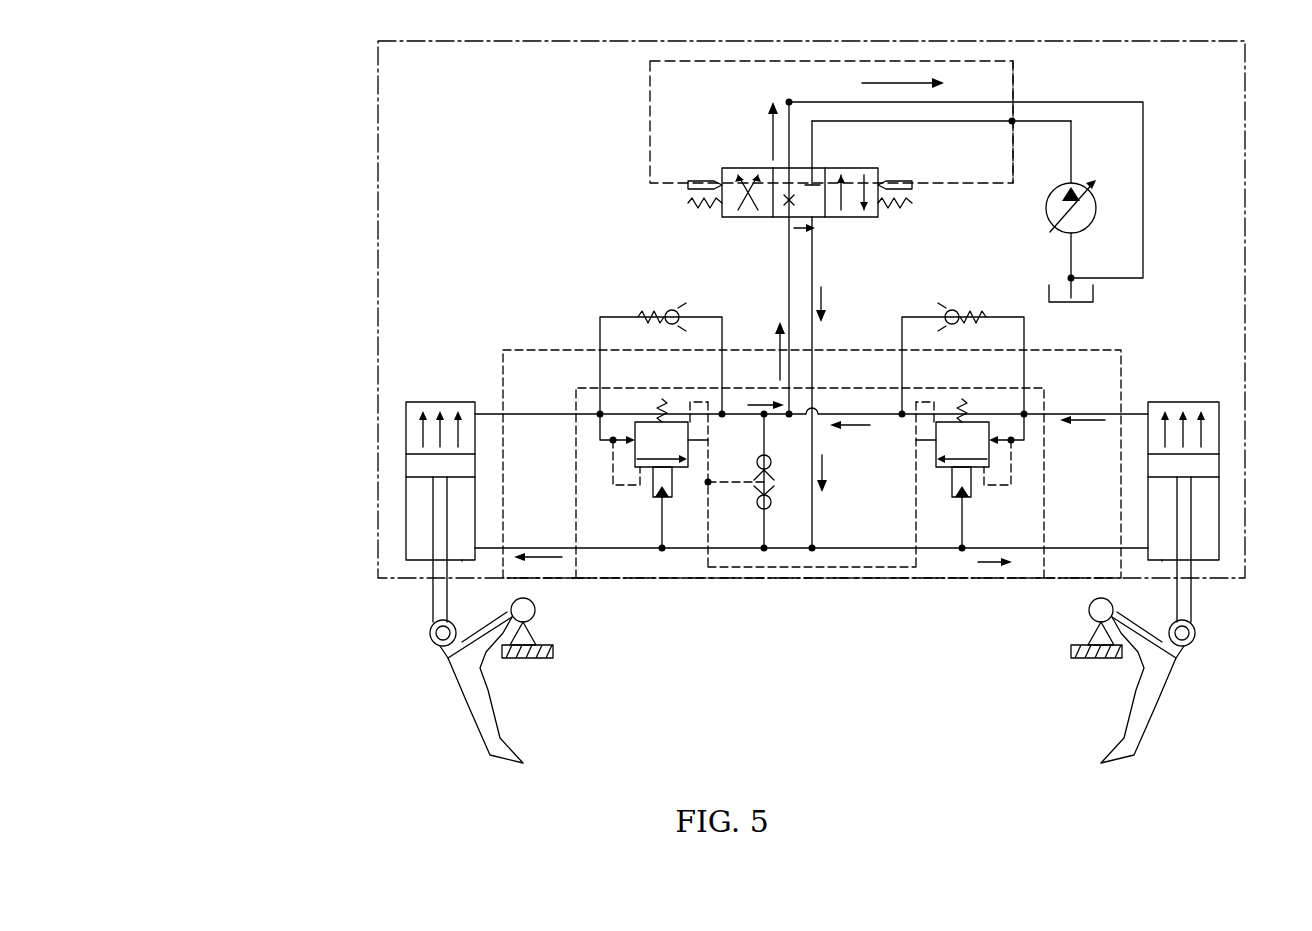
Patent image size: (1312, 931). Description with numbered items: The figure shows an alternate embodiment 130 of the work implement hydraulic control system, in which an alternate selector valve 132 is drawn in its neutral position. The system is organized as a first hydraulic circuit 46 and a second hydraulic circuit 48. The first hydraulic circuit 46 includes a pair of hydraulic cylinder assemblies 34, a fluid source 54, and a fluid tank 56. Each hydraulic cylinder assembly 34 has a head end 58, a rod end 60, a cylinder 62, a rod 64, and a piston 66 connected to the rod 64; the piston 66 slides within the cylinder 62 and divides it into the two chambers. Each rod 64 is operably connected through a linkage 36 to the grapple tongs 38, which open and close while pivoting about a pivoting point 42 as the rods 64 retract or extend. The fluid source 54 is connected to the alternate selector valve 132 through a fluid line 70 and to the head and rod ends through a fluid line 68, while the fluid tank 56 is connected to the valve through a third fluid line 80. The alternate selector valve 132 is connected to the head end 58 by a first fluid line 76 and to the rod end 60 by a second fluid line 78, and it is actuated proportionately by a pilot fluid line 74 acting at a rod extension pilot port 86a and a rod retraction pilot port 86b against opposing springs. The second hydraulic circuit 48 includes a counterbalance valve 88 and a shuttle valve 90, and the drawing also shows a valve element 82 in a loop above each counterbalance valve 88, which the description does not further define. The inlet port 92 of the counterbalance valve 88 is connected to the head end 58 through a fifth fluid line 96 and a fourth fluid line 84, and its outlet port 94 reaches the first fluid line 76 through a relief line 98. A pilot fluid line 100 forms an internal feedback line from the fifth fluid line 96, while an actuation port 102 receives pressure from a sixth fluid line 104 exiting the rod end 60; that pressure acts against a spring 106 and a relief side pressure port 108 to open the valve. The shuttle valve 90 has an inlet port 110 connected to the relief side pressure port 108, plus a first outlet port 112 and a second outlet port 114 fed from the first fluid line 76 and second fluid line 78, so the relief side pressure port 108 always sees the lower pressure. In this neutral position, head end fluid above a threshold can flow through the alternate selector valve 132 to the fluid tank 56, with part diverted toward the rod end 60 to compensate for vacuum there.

The alternate embodiment of the hydraulic control system 130 is at (212, 612).
The first hydraulic circuit 46 is at (378, 397).
The second hydraulic circuit 48 is at (935, 578).
The shuttle valve 90 is at (742, 483).
The alternate selector valve 132 is at (812, 162).
The rod extension pilot port 86a is at (688, 186).
The rod retraction pilot port 86b is at (912, 186).
The pilot fluid line 74 is at (1014, 130).
The first fluid line 76 is at (788, 308).
The second fluid line 78 is at (815, 244).
The fluid line 70 is at (882, 121).
The third fluid line 80 is at (1143, 102).
The fluid line 68 is at (1071, 123).
The fluid source 54 is at (1097, 212).
The fluid tank 56 is at (1094, 290).
The fourth fluid line 84 is at (538, 413).
The sixth fluid line 104 is at (538, 548).
The pressure relief valve 82 is at (638, 316).
The counterbalance valve 88 is at (808, 448).
The inlet port 92 is at (637, 421).
The spring 106 is at (662, 398).
The actuation port 102 is at (660, 497).
The fifth fluid line 96 is at (603, 441).
The pilot fluid line 100 is at (614, 486).
The relief side pressure port 108 is at (682, 421).
The relief line 98 is at (724, 416).
The outlet port 94 is at (688, 515).
The first outlet port 112 is at (765, 481).
The inlet port 110 is at (758, 492).
The second outlet port 114 is at (772, 492).
The hydraulic cylinder assembly 34 is at (801, 486).
The head end 58 is at (806, 455).
The cylinder 62 is at (405, 488).
The piston 66 is at (405, 463).
The rod 64 is at (433, 588).
The rod end 60 is at (462, 561).
The linkage 36 is at (430, 632).
The pivoting point 42 is at (535, 611).
The grapple tongs 38 is at (505, 742).